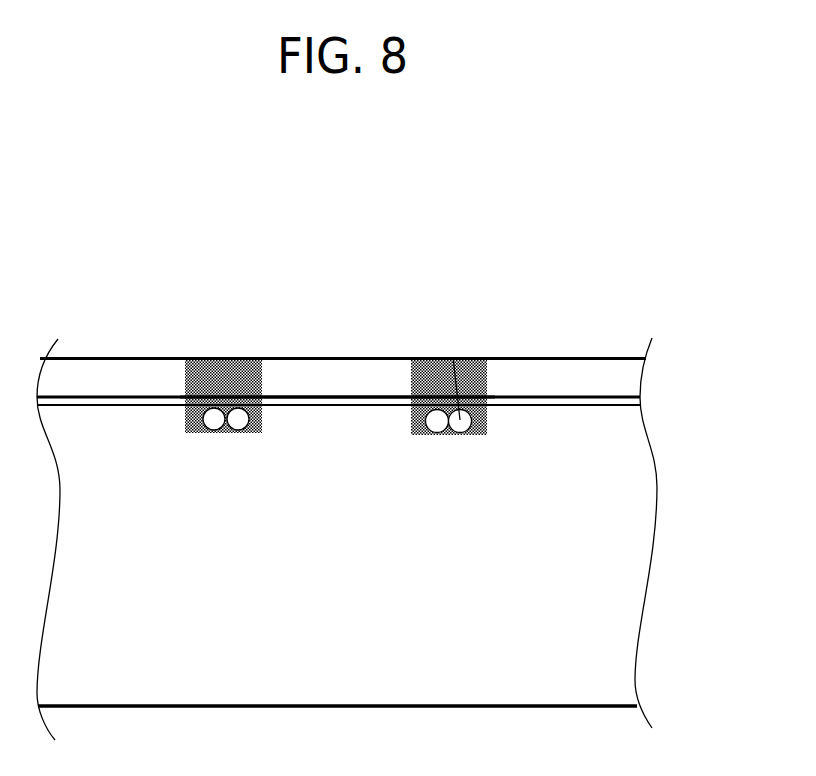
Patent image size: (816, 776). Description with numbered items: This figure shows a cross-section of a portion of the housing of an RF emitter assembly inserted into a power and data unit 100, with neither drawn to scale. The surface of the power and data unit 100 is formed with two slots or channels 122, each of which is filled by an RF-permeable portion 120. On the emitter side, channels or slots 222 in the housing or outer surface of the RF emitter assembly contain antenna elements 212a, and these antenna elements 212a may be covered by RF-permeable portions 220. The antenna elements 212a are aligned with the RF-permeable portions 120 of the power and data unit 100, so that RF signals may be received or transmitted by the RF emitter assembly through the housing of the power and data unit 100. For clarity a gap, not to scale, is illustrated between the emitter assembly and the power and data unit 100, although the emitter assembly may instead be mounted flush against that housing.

The power and data unit 100 is at (548, 357).
The RF-permeable portions 120 is at (242, 358).
The slots or channels 122 is at (188, 380).
The antenna elements 212a is at (453, 357).
The RF-permeable portions 220 is at (410, 412).
The channels or slots 222 is at (473, 435).